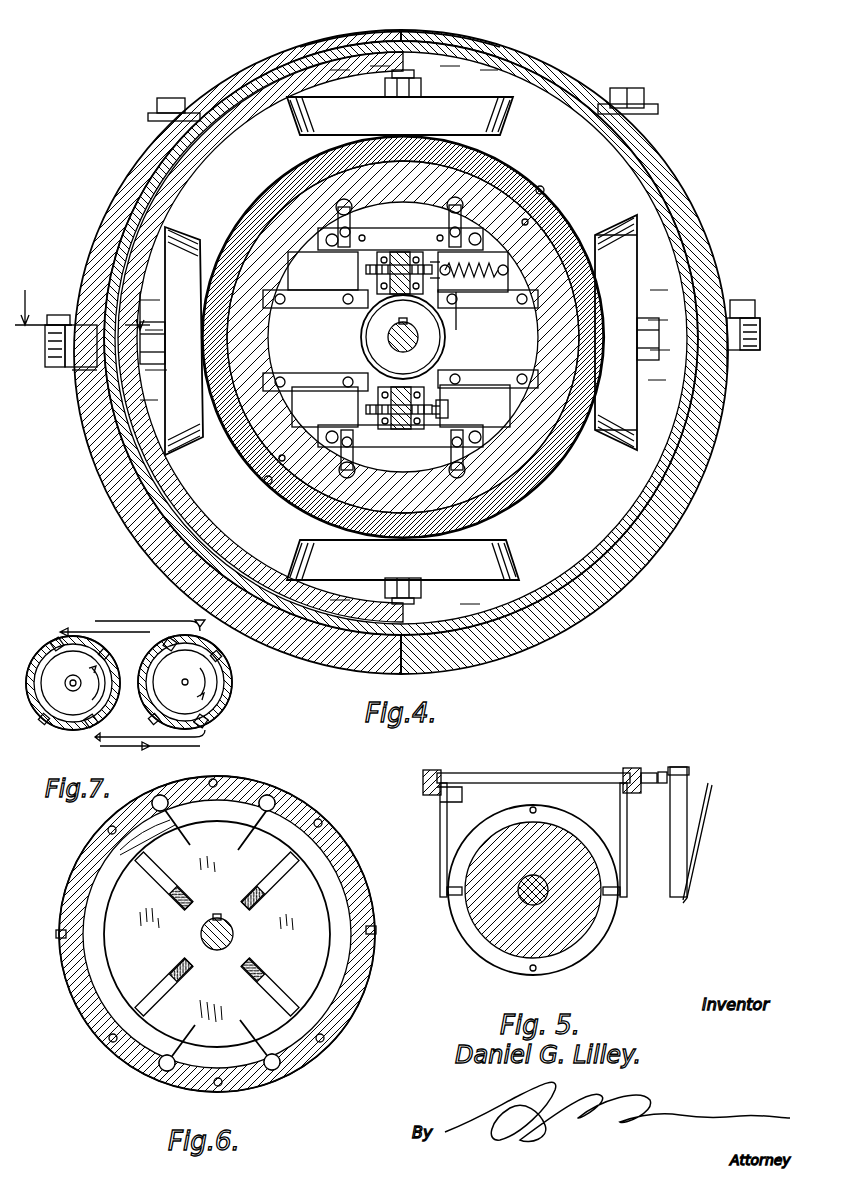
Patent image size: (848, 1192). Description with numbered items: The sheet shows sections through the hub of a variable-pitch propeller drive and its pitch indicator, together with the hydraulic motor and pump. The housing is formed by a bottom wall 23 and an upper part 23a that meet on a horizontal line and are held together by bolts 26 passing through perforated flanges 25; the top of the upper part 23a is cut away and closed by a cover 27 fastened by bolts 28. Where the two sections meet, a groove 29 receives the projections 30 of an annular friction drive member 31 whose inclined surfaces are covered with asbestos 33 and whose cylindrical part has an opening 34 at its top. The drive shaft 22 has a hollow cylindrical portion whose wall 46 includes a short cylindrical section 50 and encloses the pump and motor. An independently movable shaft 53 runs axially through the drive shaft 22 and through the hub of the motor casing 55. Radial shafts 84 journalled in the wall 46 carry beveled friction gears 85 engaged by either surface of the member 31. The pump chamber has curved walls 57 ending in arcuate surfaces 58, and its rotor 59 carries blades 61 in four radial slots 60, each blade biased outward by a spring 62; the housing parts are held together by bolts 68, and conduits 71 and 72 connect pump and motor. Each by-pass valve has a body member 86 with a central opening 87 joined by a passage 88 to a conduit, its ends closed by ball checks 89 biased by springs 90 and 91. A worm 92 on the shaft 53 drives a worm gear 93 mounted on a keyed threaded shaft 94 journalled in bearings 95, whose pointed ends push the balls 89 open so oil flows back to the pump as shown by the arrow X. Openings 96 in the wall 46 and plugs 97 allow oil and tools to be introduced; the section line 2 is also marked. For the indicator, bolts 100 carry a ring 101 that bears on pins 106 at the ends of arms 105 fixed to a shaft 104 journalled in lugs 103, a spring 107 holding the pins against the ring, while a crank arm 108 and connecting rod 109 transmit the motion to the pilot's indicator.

In FIG. 4, the section line 2 is at (83, 310).
In FIG. 5, the drive shaft 22 is at (590, 922).
In FIG. 4, the bottom wall 23 is at (578, 618).
In FIG. 4, the upper part 23a is at (668, 162).
In FIG. 4, the flanges 25 is at (45, 348).
In FIG. 4, the bolts 26 is at (745, 352).
In FIG. 4, the cover 27 is at (493, 44).
In FIG. 4, the bolts 28 is at (645, 94).
In FIG. 4, the groove 29 is at (80, 372).
In FIG. 4, the projections 30 is at (90, 330).
In FIG. 4, the annular friction drive member 31 is at (212, 100).
In FIG. 4, the asbestos 33 is at (405, 335).
In FIG. 4, the opening 34 is at (325, 48).
In FIG. 4, the cylindrical wall 46 is at (556, 236).
In FIG. 4, the cylindrical section 50 is at (318, 492).
In FIG. 4, the independently movable shaft 53 is at (389, 336).
In FIG. 6, the independently movable shaft 53 is at (234, 934).
In FIG. 5, the independently movable shaft 53 is at (522, 896).
In FIG. 4, the motor casing 55 is at (575, 322).
In FIG. 7, the motor casing 55 is at (150, 652).
In FIG. 6, the motor casing 55 is at (358, 866).
In FIG. 7, the curved walls 57 is at (104, 706).
In FIG. 6, the curved walls 57 is at (92, 895).
In FIG. 7, the arcuate surfaces 58 is at (129, 682).
In FIG. 6, the arcuate surfaces 58 is at (215, 818).
In FIG. 7, the rotor 59 is at (232, 684).
In FIG. 6, the rotor 59 is at (217, 934).
In FIG. 6, the radial slots 60 is at (283, 865).
In FIG. 6, the blade 61 is at (148, 866).
In FIG. 6, the spring 62 is at (255, 875).
In FIG. 6, the bolts 68 is at (322, 1042).
In FIG. 4, the conduit 71 is at (338, 214).
In FIG. 7, the conduit 71 is at (58, 646).
In FIG. 6, the conduit 71 is at (162, 812).
In FIG. 4, the conduit 72 is at (460, 205).
In FIG. 7, the conduit 72 is at (132, 699).
In FIG. 6, the conduit 72 is at (278, 800).
In FIG. 4, the radial shafts 84 is at (412, 74).
In FIG. 4, the friction gears 85 is at (401, 338).
In FIG. 4, the body member 86 is at (400, 340).
In FIG. 4, the central opening 87 is at (466, 292).
In FIG. 4, the passage 88 is at (425, 238).
In FIG. 4, the ball checks 89 is at (600, 268).
In FIG. 4, the springs 90 is at (500, 294).
In FIG. 4, the springs 91 is at (455, 320).
In FIG. 4, the worm 92 is at (366, 352).
In FIG. 4, the worm gear 93 is at (394, 351).
In FIG. 4, the threaded shaft 94 is at (381, 339).
In FIG. 4, the bearings 95 is at (430, 404).
In FIG. 4, the openings 96 is at (515, 213).
In FIG. 4, the plugs 97 is at (528, 225).
In FIG. 5, the bolts 100 is at (538, 808).
In FIG. 5, the ring 101 is at (485, 958).
In FIG. 5, the lugs 103 is at (428, 770).
In FIG. 5, the shaft 104 is at (538, 776).
In FIG. 5, the arms 105 is at (440, 830).
In FIG. 5, the pins 106 is at (450, 896).
In FIG. 5, the spring 107 is at (469, 799).
In FIG. 5, the crank arm 108 is at (684, 900).
In FIG. 5, the connecting rod 109 is at (700, 842).
In FIG. 4, the arrow X is at (414, 316).